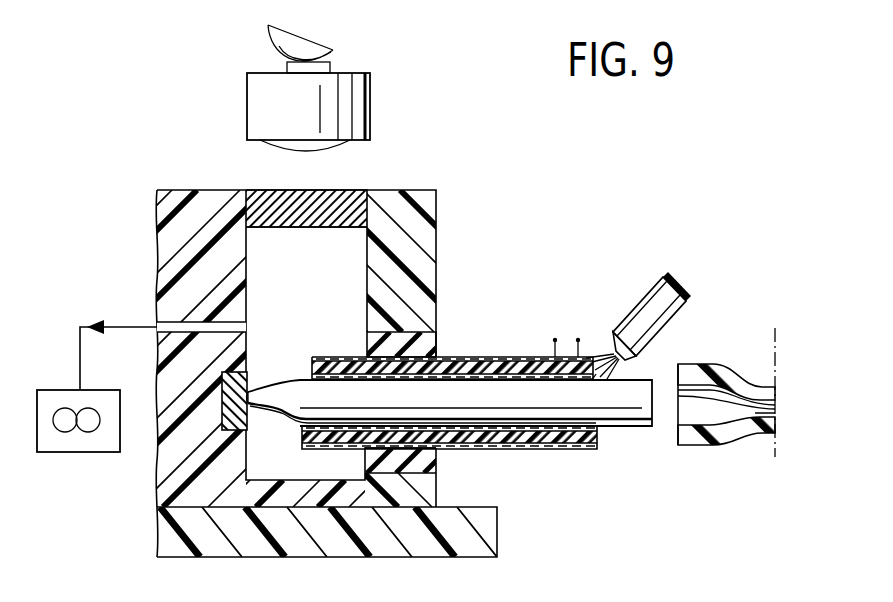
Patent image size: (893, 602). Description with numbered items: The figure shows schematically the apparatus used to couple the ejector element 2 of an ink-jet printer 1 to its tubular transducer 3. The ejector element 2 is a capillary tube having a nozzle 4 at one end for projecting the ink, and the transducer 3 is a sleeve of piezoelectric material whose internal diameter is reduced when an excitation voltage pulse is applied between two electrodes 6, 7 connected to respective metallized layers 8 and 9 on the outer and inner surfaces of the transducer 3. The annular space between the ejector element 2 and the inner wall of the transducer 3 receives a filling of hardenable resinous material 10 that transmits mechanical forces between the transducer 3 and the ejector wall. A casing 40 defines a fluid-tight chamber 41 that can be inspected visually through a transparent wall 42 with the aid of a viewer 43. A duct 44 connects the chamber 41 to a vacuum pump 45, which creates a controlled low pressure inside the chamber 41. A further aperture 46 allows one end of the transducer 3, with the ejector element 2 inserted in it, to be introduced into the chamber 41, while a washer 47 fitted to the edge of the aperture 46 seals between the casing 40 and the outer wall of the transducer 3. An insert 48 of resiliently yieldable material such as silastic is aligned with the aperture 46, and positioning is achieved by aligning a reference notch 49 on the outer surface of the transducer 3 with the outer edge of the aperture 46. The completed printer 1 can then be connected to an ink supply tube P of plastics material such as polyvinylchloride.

The ink-jet printer 1 is at (613, 446).
The tubular ejector element 2 is at (665, 362).
The tubular transducer 3 is at (525, 357).
The nozzle 4 is at (250, 388).
The electrode 6 is at (555, 338).
The electrode 7 is at (578, 338).
The metallized layer 8 is at (473, 357).
The metallized layer 9 is at (591, 352).
The hardenable resinous material 10 is at (266, 387).
The casing 40 is at (452, 256).
The fluid-tight chamber 41 is at (318, 255).
The transparent wall 42 is at (348, 191).
The viewer 43 is at (350, 95).
The duct 44 is at (183, 320).
The vacuum pump 45 is at (72, 440).
The aperture 46 is at (448, 347).
The washer 47 is at (365, 460).
The insert of resiliently yieldable material 48 is at (220, 424).
The reference notch 49 is at (449, 354).
The ink supply tube P is at (753, 387).